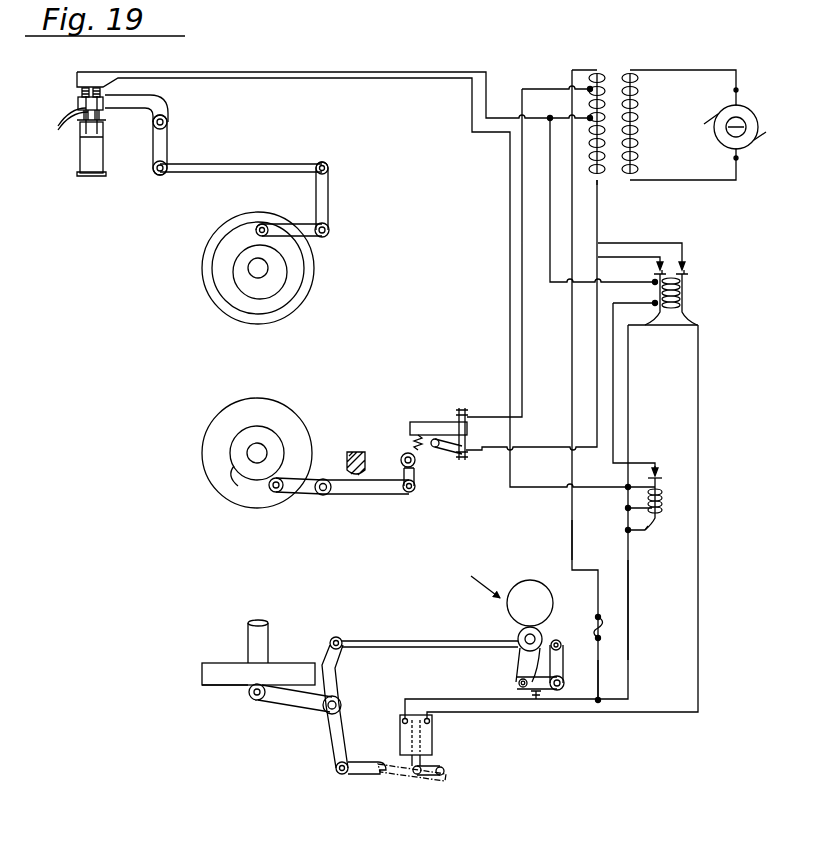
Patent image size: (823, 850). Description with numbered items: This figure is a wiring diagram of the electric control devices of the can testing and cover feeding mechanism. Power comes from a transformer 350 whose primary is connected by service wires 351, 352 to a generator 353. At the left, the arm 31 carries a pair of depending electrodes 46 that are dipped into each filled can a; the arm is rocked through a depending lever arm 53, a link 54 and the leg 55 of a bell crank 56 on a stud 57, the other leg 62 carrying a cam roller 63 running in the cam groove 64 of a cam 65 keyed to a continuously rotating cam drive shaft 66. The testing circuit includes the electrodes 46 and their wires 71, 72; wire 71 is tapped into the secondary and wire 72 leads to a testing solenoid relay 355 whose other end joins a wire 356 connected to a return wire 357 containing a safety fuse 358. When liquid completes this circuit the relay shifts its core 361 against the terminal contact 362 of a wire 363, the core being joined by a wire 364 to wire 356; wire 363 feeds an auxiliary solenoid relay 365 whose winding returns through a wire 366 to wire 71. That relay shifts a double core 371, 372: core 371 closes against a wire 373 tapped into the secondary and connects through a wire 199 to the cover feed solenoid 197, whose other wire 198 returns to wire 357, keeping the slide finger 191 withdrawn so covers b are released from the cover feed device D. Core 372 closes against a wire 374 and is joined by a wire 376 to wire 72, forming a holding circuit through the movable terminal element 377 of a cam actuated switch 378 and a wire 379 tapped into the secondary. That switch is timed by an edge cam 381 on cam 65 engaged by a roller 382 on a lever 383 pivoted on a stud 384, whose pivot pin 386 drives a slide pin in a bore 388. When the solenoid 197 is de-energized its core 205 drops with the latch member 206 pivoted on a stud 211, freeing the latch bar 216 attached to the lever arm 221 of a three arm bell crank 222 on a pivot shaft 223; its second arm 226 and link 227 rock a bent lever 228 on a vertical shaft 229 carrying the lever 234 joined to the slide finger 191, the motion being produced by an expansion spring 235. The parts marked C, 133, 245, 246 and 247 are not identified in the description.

The wire 71 is at (320, 72).
The wire 72 is at (332, 80).
The terminal block C is at (74, 105).
The electrodes 46 is at (68, 120).
The filled can a is at (80, 157).
The arm 31 is at (134, 100).
The lever arm 53 is at (168, 142).
The link 54 is at (262, 165).
The leg 55 is at (330, 196).
The bell crank 56 is at (330, 222).
The stud 57 is at (328, 235).
The leg 62 is at (297, 222).
The cam roller 63 is at (258, 226).
The cam groove 64 is at (222, 284).
The cam 65 is at (206, 268).
The cam drive shaft 66 is at (258, 268).
The transformer 350 is at (606, 66).
The service wire 351 is at (685, 180).
The service wire 352 is at (708, 66).
The generator 353 is at (744, 110).
The wire 366 is at (550, 256).
The wire 374 is at (612, 257).
The wire 373 is at (652, 244).
The core 372 is at (652, 273).
The core 371 is at (690, 274).
The auxiliary solenoid relay 365 is at (690, 296).
The wire 379 is at (572, 326).
The wire 376 is at (632, 360).
The wire 363 is at (620, 392).
The cam actuated switch 378 is at (436, 420).
The movable terminal element 377 is at (458, 460).
The edge cam 381 is at (233, 479).
The roller 382 is at (272, 494).
The lever 383 is at (306, 500).
The pivot stud 384 is at (330, 496).
The pivot pin 386 is at (408, 496).
The bore 388 is at (416, 488).
The terminal contact 362 is at (658, 466).
The core 361 is at (660, 478).
The testing solenoid relay 355 is at (662, 501).
The wire 364 is at (652, 532).
The return wire 357 is at (572, 540).
The wire 356 is at (628, 596).
The safety fuse 358 is at (596, 616).
The wire 199 is at (700, 632).
The wire 198 is at (452, 690).
The cover feed device D is at (476, 577).
The can cover b is at (528, 586).
The pivot 133 is at (518, 636).
The link 227 is at (412, 640).
The second arm 226 is at (328, 646).
The cover slide finger 191 is at (520, 660).
The bent lever 228 is at (564, 654).
The vertical shaft 229 is at (566, 682).
The lever 234 is at (518, 680).
The expansion spring 235 is at (540, 700).
The bar 245 is at (212, 686).
The pivot 246 is at (252, 700).
The link 247 is at (300, 712).
The three arm bell crank 222 is at (342, 690).
The pivot shaft 223 is at (342, 702).
The lever arm 221 is at (336, 752).
The latch bar 216 is at (360, 778).
The latch member 206 is at (412, 782).
The stud 211 is at (446, 774).
The core 205 is at (424, 766).
The solenoid 197 is at (432, 742).